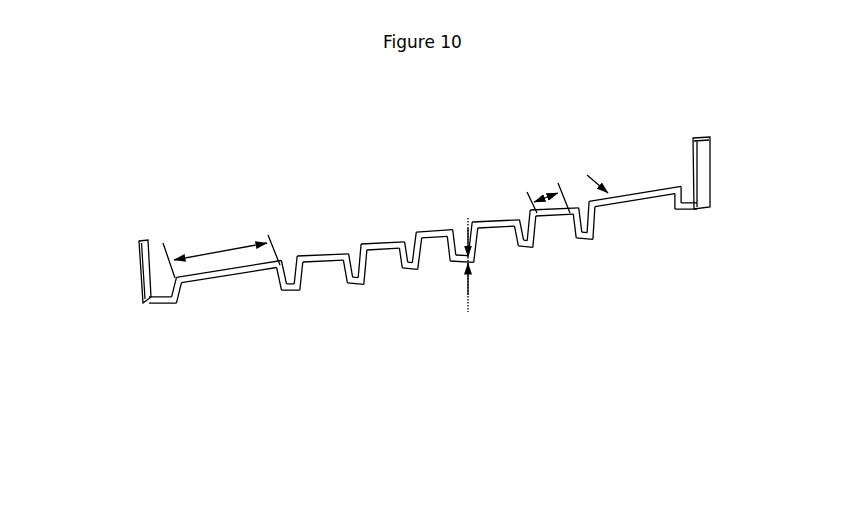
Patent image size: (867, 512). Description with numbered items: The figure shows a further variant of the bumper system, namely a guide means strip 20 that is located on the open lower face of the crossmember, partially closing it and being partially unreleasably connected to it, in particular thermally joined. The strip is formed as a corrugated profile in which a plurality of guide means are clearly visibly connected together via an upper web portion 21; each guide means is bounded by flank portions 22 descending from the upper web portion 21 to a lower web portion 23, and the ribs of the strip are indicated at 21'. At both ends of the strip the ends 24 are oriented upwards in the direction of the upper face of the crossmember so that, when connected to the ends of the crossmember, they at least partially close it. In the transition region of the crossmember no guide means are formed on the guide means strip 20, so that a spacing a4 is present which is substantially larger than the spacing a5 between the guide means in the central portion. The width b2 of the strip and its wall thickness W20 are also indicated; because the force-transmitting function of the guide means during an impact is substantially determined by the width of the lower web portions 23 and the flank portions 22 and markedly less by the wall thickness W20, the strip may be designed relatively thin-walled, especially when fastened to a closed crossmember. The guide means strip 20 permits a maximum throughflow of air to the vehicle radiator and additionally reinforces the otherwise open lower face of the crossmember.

The guide means strip 20 is at (410, 275).
The upper web portion 21 is at (378, 220).
The rib segment 21' is at (440, 317).
The flank portion 22 is at (373, 272).
The lower web portion 23 is at (142, 263).
The additional wall 24 is at (633, 207).
The spacing a4 is at (221, 255).
The spacing a5 is at (548, 184).
The width of guide means strip b2 is at (604, 174).
The wall thickness of guide means strip W20 is at (491, 265).